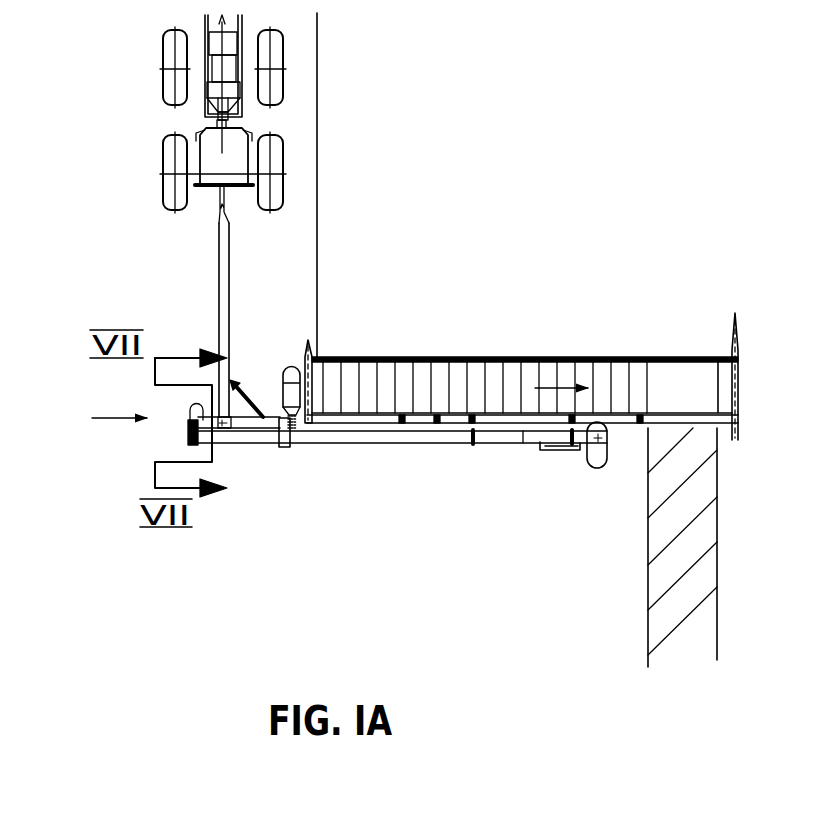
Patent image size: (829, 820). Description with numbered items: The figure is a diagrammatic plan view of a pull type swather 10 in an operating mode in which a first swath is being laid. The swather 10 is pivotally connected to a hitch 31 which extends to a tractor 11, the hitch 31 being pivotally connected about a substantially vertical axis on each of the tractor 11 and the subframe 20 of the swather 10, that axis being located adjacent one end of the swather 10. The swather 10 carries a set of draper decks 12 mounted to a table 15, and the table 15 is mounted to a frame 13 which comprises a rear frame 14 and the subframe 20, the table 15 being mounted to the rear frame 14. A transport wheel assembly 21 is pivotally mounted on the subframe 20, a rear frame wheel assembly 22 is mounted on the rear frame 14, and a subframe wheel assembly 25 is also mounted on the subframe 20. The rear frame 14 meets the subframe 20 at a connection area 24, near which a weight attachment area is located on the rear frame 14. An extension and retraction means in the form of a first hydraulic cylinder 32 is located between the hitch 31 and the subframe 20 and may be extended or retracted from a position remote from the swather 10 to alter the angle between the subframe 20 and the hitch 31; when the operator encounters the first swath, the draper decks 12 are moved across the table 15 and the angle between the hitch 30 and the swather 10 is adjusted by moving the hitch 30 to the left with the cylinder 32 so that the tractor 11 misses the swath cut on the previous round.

The swather 10 is at (418, 458).
The tractor 11 is at (298, 108).
The draper decks 12 is at (437, 345).
The frame 13 is at (308, 453).
The rear frame 14 is at (503, 443).
The table 15 is at (627, 428).
The subframe 20 is at (275, 417).
The transport wheel assembly 21 is at (310, 378).
The rear frame wheel assembly 22 is at (562, 465).
The connection area 24 is at (163, 448).
The subframe wheel assembly 25 is at (95, 413).
The hitch 30 is at (217, 267).
The hitch 31 is at (222, 195).
The first hydraulic cylinder 32 is at (248, 395).